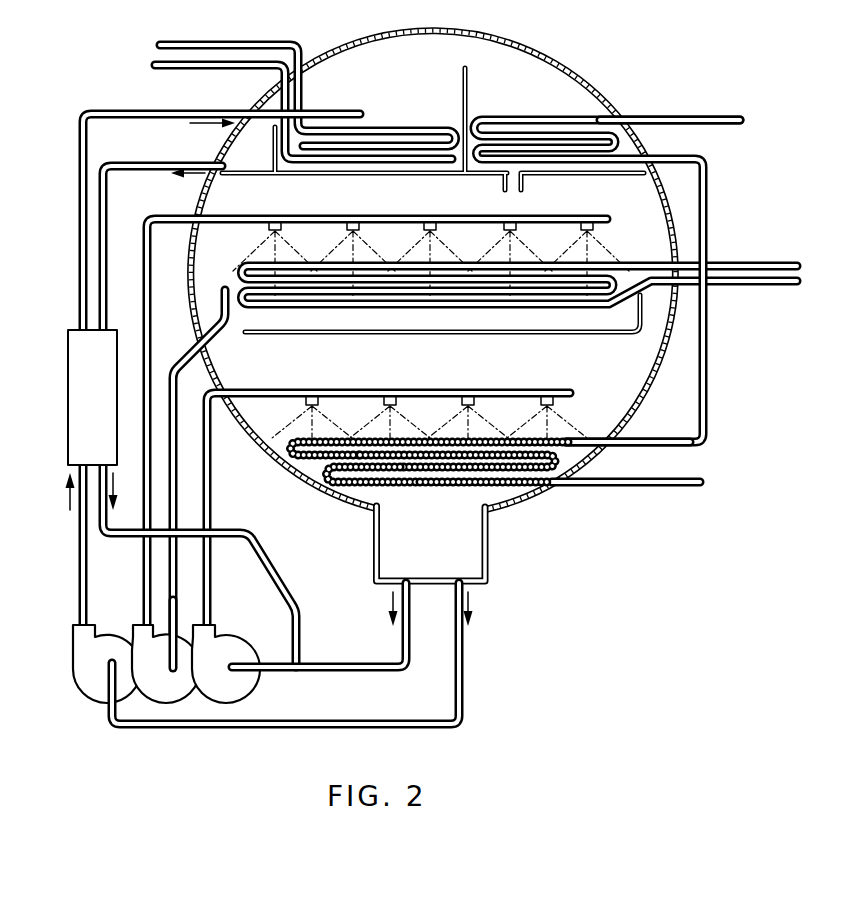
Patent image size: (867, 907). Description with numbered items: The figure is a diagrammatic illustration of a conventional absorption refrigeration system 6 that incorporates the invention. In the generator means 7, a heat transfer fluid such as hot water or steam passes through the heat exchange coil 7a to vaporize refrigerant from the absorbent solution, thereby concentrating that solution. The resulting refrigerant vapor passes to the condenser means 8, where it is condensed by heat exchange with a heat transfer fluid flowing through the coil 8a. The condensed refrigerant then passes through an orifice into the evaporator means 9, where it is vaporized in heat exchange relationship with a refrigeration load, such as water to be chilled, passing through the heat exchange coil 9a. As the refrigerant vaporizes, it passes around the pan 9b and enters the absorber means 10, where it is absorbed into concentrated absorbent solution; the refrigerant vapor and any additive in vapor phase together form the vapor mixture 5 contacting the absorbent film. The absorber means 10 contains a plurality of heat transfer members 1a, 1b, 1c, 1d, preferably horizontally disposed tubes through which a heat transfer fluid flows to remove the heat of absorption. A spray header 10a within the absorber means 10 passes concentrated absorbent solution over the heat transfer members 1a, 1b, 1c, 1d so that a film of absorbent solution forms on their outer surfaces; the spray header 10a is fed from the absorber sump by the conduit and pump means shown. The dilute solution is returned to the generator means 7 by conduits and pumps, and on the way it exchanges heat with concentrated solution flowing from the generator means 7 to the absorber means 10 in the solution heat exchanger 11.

The heat transfer member 1a is at (326, 484).
The heat transfer member 1b is at (334, 470).
The heat transfer member 1c is at (300, 464).
The heat transfer member 1d is at (292, 440).
The vapor mixture 5 is at (478, 467).
The absorption refrigeration system 6 is at (536, 518).
The generator means 7 is at (419, 101).
The heat exchange coil 7a is at (390, 131).
The condenser means 8 is at (502, 103).
The coil 8a is at (552, 117).
The evaporator means 9 is at (394, 256).
The heat exchange coil 9a is at (474, 265).
The pan 9b is at (462, 332).
The absorber means 10 is at (428, 373).
The spray header 10a is at (510, 391).
The solution heat exchanger 11 is at (100, 413).